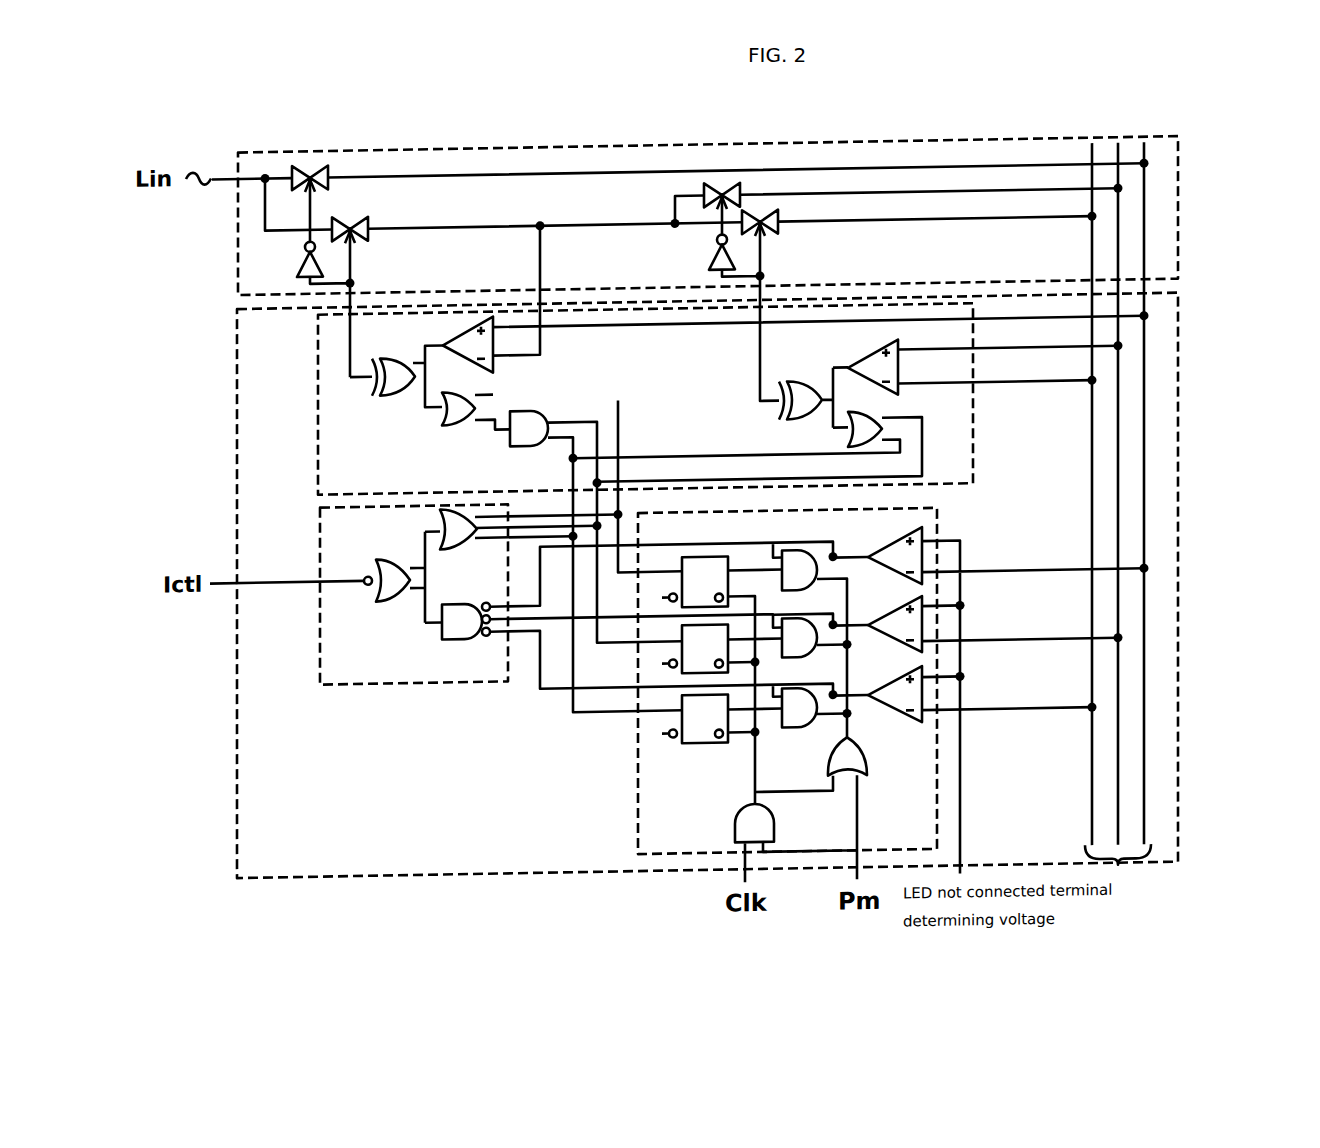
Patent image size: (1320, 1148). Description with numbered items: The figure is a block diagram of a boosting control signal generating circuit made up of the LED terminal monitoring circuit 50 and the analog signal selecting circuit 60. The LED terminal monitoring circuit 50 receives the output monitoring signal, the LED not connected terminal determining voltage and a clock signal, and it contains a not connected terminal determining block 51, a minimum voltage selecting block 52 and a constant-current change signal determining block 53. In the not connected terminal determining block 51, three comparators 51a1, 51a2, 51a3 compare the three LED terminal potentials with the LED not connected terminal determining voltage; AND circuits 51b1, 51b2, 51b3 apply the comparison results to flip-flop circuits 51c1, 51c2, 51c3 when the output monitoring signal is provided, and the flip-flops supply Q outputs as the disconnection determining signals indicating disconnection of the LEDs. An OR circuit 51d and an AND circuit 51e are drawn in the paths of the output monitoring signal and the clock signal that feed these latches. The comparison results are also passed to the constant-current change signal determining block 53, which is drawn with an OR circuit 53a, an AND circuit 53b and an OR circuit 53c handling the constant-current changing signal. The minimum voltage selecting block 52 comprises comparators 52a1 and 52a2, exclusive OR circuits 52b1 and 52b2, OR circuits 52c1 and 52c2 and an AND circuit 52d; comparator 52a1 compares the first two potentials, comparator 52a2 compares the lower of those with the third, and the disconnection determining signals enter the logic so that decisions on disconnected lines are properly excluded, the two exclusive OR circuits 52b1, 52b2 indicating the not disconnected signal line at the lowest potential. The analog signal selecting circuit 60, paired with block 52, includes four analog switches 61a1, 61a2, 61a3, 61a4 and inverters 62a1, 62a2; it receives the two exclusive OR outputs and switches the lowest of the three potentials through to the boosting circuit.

The analog signal selecting circuit 60 is at (1178, 183).
The LED terminal monitoring circuit 50 is at (1178, 486).
The minimum voltage selecting block 52 is at (973, 445).
The not connected terminal determining block 51 is at (937, 516).
The constant-current change signal determining block 53 is at (425, 678).
The analog switch 61a1 is at (776, 232).
The analog switch 61a2 is at (704, 192).
The analog switch 61a3 is at (366, 216).
The analog switch 61a4 is at (328, 178).
The inverter 62a1 is at (708, 258).
The inverter 62a2 is at (322, 262).
The comparator 52a1 is at (858, 350).
The comparator 52a2 is at (546, 347).
The exclusive OR circuit 52b1 is at (786, 390).
The exclusive OR circuit 52b2 is at (368, 392).
The OR circuit 52c1 is at (875, 420).
The OR circuit 52c2 is at (446, 424).
The AND circuit 52d is at (512, 445).
The comparator 51a1 is at (870, 556).
The comparator 51a2 is at (870, 624).
The comparator 51a3 is at (870, 694).
The AND circuit 51b1 is at (773, 557).
The AND circuit 51b2 is at (773, 625).
The AND circuit 51b3 is at (773, 695).
The flip-flop circuit 51c1 is at (688, 556).
The flip-flop circuit 51c2 is at (673, 678).
The flip-flop circuit 51c3 is at (712, 748).
The OR circuit 51d is at (862, 760).
The AND circuit 51e is at (774, 826).
The OR circuit 53a is at (450, 548).
The AND circuit 53b is at (445, 637).
The OR circuit 53c is at (372, 597).